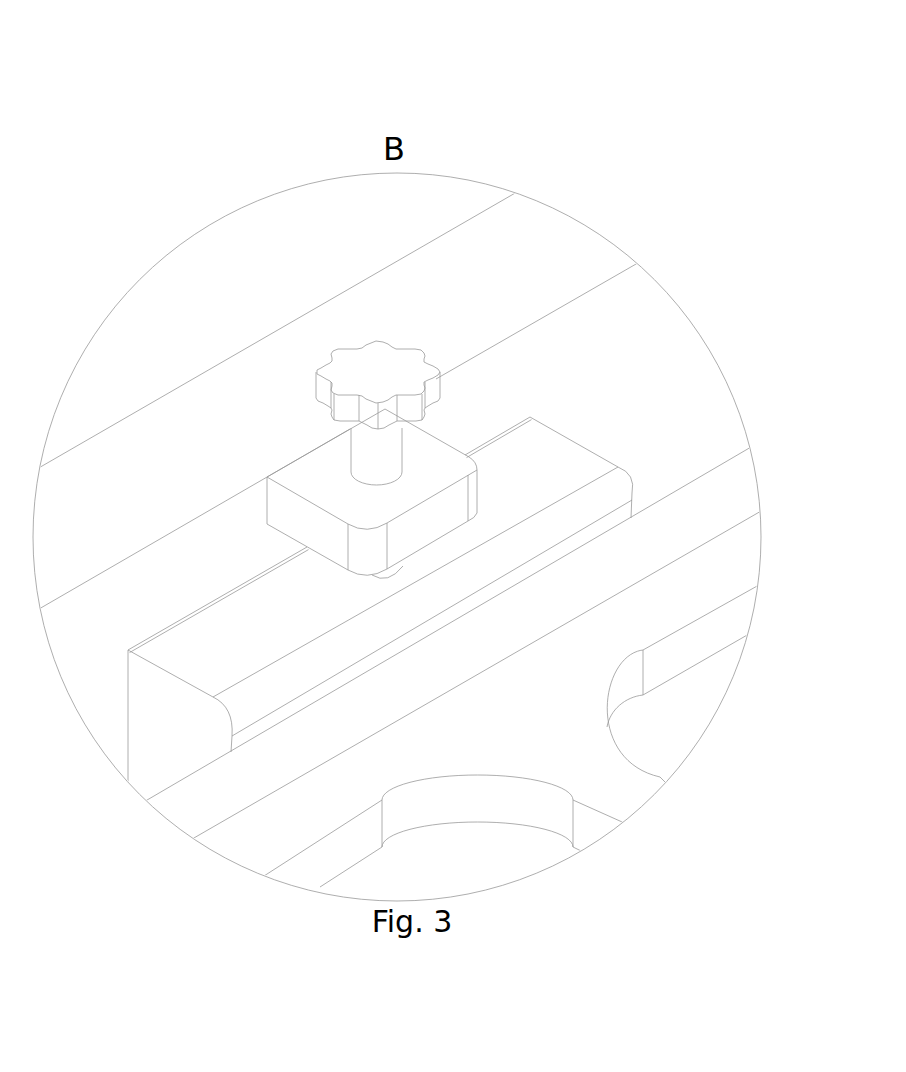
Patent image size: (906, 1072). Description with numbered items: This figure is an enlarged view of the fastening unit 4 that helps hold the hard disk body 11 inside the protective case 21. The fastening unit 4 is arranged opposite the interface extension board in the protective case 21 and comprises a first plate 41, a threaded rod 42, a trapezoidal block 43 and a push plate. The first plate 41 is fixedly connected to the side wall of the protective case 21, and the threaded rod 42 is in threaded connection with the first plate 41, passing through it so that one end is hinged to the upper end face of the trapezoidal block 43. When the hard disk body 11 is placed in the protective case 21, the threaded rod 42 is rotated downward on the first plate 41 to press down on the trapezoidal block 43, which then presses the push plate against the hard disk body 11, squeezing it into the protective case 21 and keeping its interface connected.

The fastening unit 4 is at (205, 620).
The hard disk body 11 is at (742, 498).
The protective case 21 is at (591, 249).
The first plate 41 is at (443, 455).
The threaded rod 42 is at (406, 370).
The trapezoidal block 43 is at (580, 458).